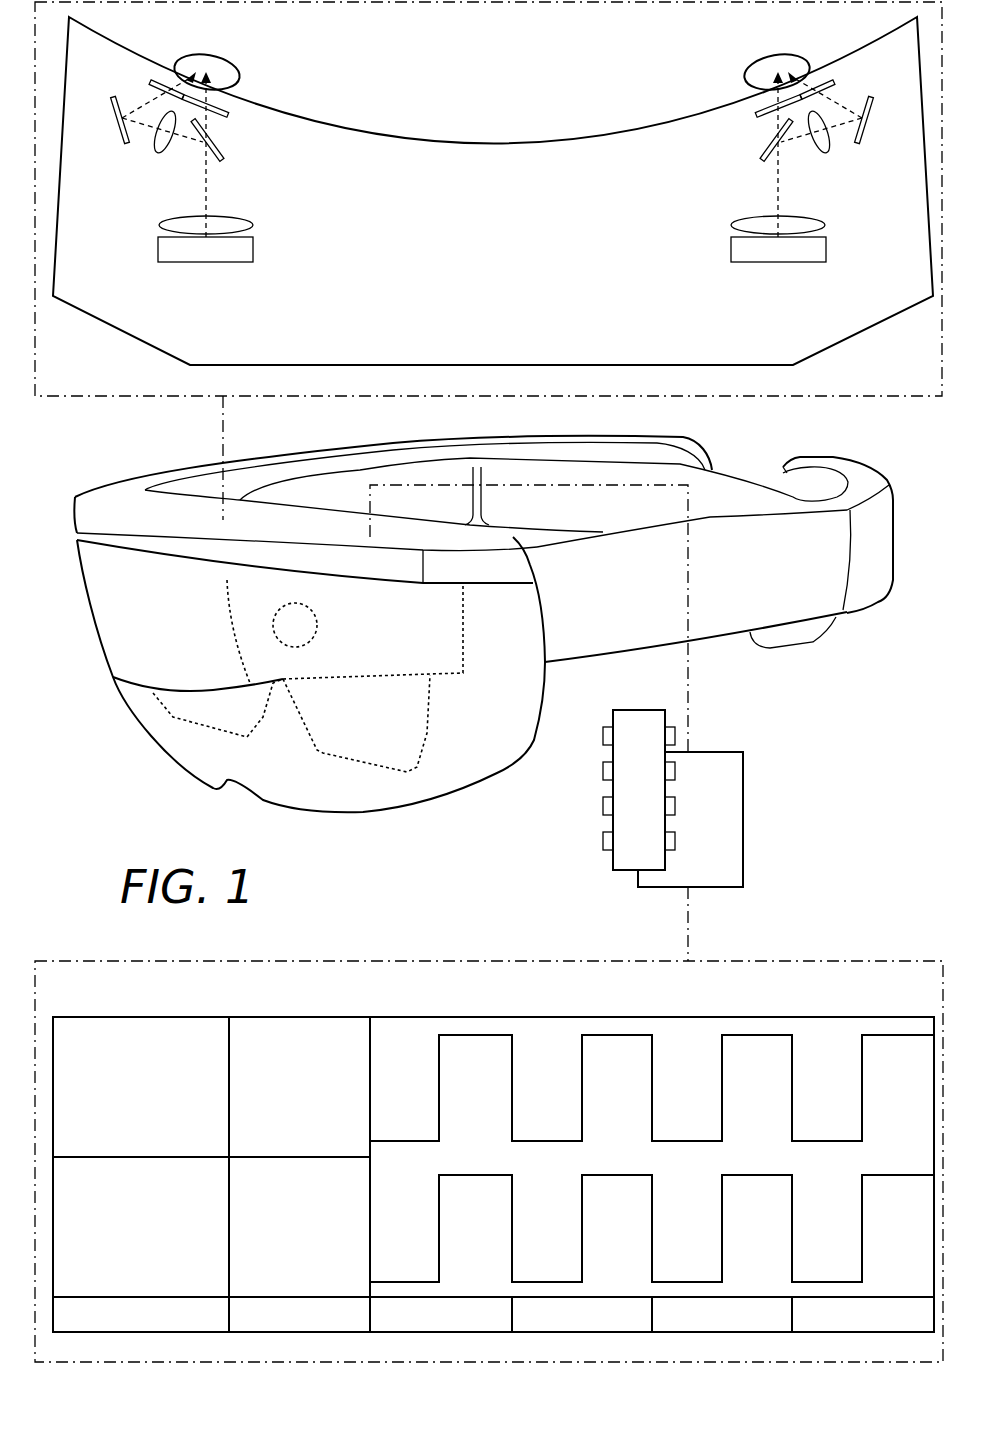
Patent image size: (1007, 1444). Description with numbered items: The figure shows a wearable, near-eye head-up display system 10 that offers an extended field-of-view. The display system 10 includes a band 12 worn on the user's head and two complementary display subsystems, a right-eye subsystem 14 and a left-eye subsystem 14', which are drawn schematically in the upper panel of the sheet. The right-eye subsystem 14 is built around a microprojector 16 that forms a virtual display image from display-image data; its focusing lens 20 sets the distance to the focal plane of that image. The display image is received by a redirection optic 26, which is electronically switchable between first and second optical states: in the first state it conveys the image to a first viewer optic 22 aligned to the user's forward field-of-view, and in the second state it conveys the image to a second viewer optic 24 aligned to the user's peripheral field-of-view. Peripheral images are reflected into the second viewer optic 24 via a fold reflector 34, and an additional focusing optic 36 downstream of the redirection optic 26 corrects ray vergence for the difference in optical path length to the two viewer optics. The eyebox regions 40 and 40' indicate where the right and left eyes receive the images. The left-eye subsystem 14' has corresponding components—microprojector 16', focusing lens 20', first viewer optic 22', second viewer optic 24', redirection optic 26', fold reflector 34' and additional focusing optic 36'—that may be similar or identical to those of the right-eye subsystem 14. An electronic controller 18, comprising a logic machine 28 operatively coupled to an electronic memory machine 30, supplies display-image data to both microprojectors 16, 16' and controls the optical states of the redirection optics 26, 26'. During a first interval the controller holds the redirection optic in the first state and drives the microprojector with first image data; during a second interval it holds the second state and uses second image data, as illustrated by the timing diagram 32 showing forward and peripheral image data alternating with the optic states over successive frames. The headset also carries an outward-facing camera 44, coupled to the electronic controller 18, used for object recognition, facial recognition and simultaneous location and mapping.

The head-up display system 10 is at (514, 258).
The band 12 is at (624, 595).
The right-eye subsystem 14 is at (236, 201).
The left-eye subsystem 14' is at (744, 201).
The microprojector 16 is at (205, 249).
The microprojector 16' is at (778, 249).
The electronic controller 18 is at (686, 782).
The focusing lens 20 is at (173, 231).
The focusing lens 20' is at (816, 231).
The first viewer optic 22 is at (247, 103).
The first viewer optic 22' is at (747, 103).
The second viewer optic 24 is at (129, 92).
The second viewer optic 24' is at (857, 86).
The redirection optic 26 is at (240, 140).
The redirection optic 26' is at (743, 140).
The logic machine 28 is at (702, 829).
The electronic memory machine 30 is at (650, 800).
The timing diagram 32 is at (501, 993).
The fold reflector 34 is at (111, 132).
The fold reflector 34' is at (878, 133).
The additional focusing optic 36 is at (174, 145).
The additional focusing optic 36' is at (812, 145).
The eye / eyebox 40 is at (242, 72).
The eye / eyebox 40' is at (739, 72).
The camera 44 is at (307, 635).